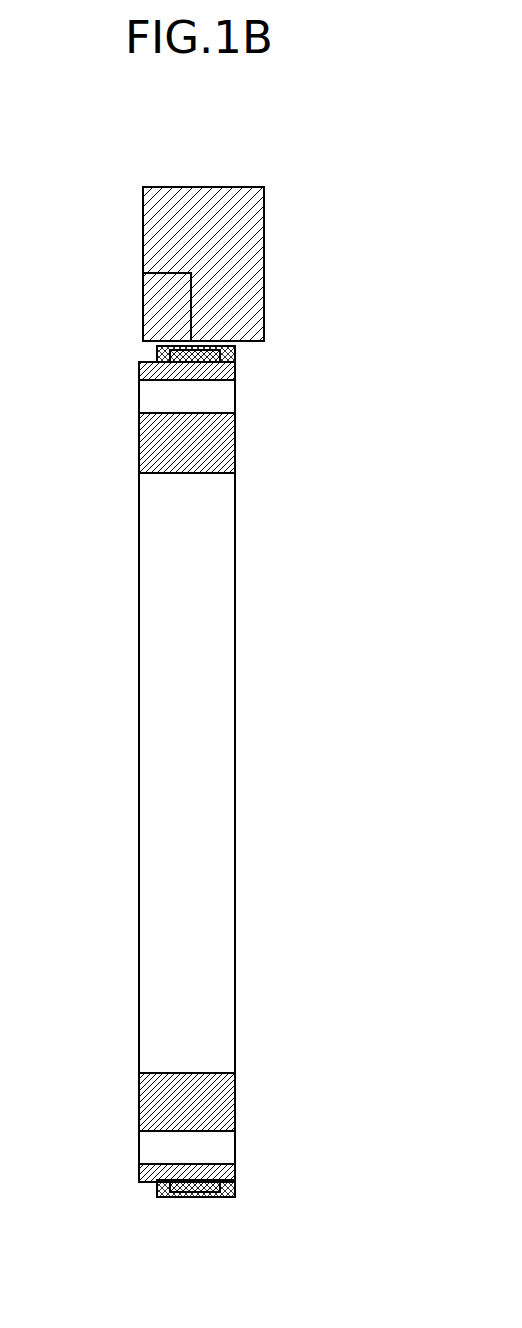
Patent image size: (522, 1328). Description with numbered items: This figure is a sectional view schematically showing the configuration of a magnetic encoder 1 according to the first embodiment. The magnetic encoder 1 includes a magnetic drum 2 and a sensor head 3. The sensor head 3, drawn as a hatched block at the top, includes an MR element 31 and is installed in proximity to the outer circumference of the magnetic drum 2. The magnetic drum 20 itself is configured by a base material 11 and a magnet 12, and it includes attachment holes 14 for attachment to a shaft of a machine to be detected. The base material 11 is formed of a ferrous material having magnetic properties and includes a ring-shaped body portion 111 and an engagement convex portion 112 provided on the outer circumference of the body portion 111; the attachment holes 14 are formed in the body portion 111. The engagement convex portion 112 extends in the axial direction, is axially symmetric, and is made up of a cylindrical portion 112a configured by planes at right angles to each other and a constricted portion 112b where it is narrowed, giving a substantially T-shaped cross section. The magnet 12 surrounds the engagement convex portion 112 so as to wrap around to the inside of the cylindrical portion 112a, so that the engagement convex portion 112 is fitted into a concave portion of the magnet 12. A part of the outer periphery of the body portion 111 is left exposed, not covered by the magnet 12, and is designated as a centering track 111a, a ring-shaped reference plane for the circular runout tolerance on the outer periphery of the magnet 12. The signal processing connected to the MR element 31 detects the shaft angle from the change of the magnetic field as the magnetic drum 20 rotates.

The magnetic encoder 1 is at (398, 450).
The magnetic drum 2 is at (307, 702).
The sensor head 3 is at (201, 187).
The MR element 31 is at (232, 307).
The base material 11 is at (232, 458).
The magnet 12 is at (157, 352).
The attachment hole 14 is at (187, 383).
The magnetic drum 20 is at (233, 1076).
The body portion 111 is at (140, 1122).
The centering track 111a is at (143, 1185).
The engagement convex portion 112 is at (232, 1183).
The cylindrical portion 112a is at (200, 1197).
The constricted portion 112b is at (196, 1180).